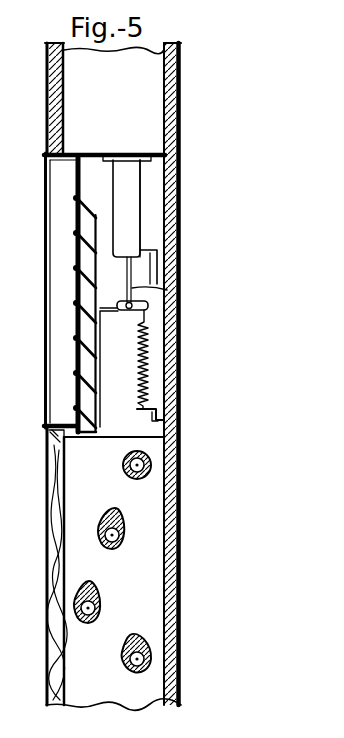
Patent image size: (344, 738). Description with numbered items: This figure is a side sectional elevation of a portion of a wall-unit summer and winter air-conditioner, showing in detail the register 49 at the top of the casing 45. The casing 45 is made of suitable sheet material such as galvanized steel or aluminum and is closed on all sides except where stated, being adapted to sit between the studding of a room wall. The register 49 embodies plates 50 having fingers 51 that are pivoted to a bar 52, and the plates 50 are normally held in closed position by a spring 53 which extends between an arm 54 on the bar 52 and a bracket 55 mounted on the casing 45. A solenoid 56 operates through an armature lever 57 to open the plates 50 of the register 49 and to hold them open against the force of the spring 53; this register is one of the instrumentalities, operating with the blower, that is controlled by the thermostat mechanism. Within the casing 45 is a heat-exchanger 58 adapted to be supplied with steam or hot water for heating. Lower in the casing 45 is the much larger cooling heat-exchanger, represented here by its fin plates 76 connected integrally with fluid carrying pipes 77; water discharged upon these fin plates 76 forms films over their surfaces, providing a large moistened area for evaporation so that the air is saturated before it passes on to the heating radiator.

The casing 45 is at (163, 360).
The register 49 is at (78, 424).
The plates 50 is at (78, 330).
The fingers 51 is at (98, 228).
The bar 52 is at (98, 372).
The spring 53 is at (143, 341).
The arm 54 is at (118, 309).
The bracket 55 is at (150, 414).
The solenoid 56 is at (133, 189).
The armature lever 57 is at (180, 277).
The heat-exchanger 58 is at (140, 513).
The fin plates 76 is at (83, 439).
The fluid carrying pipes 77 is at (127, 545).